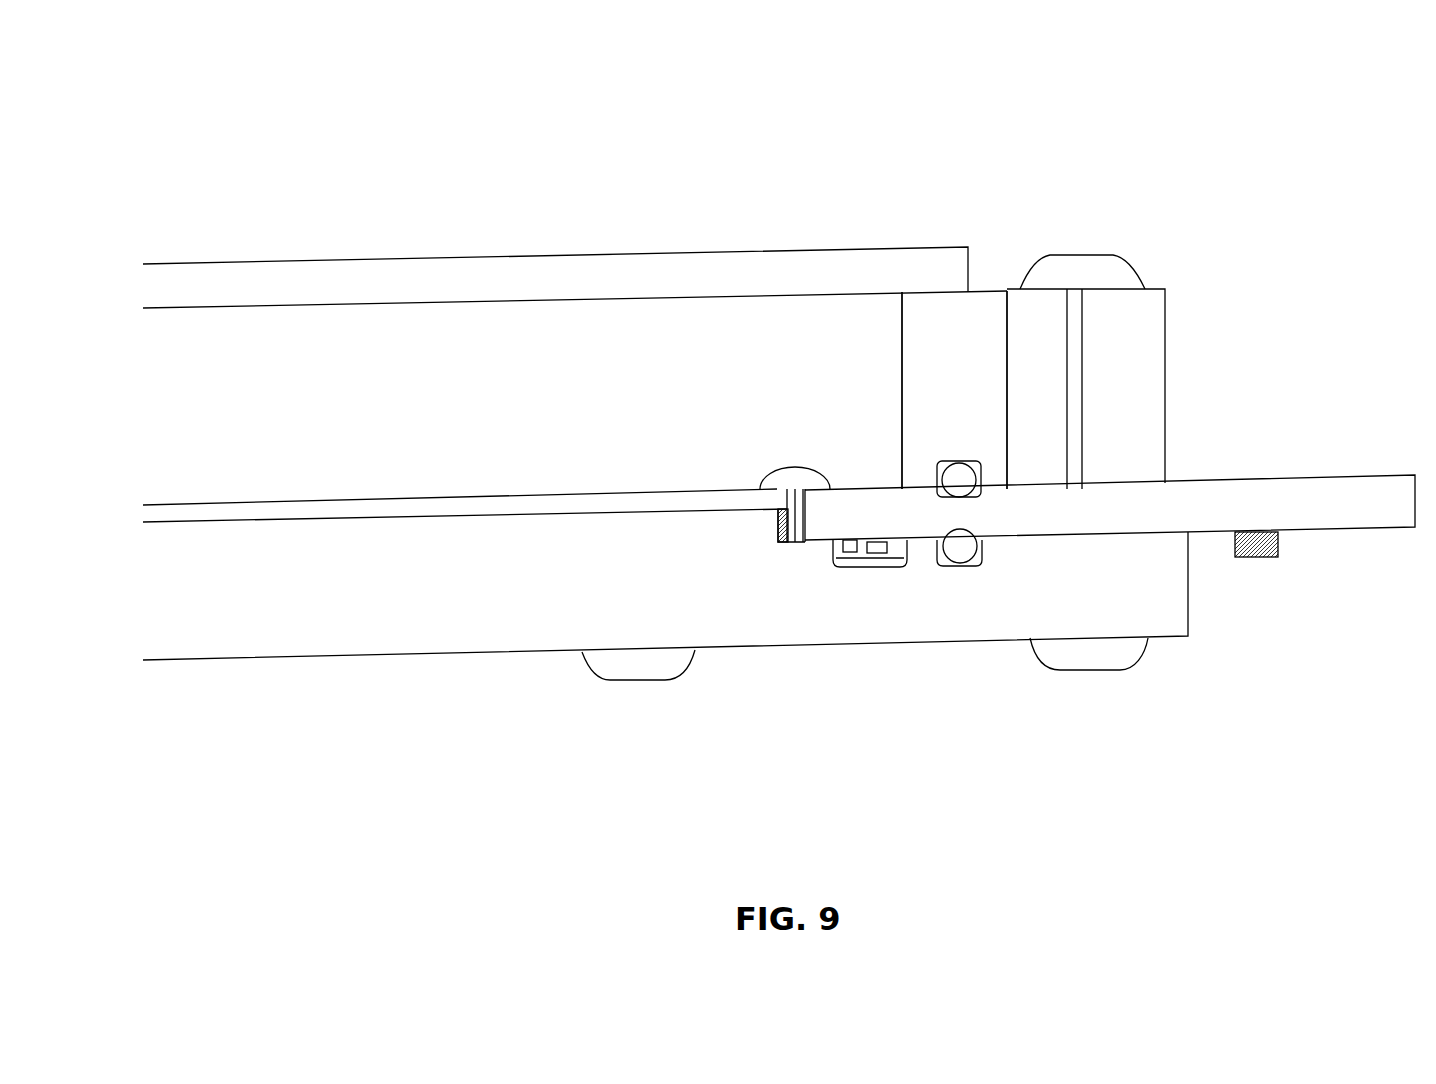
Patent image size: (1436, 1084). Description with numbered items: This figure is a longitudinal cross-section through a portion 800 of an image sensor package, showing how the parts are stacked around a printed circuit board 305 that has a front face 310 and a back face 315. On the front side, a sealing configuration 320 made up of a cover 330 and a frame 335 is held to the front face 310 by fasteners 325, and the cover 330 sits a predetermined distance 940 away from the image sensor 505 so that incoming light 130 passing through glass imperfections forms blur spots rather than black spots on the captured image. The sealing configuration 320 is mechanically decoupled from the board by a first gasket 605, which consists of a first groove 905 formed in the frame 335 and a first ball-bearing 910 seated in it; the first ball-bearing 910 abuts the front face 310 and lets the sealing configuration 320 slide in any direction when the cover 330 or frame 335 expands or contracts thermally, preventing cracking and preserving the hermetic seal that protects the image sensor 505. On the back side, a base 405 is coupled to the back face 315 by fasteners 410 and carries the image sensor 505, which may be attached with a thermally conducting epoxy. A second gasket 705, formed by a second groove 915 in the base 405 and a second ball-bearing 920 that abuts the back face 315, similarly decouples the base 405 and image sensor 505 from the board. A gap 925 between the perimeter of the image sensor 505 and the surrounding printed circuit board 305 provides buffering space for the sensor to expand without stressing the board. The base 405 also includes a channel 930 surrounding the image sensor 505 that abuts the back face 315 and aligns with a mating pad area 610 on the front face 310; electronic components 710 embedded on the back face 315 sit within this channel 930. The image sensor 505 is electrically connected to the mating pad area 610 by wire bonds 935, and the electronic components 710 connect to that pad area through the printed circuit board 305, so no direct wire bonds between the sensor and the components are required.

The portion 800 is at (1240, 137).
The incoming light 130 is at (247, 252).
The image sensor 505 is at (637, 508).
The predetermined distance 940 is at (467, 320).
The sealing configuration 320 is at (925, 147).
The cover 330 is at (850, 277).
The frame 335 is at (933, 333).
The fasteners 325 is at (1079, 270).
The first gasket 605 is at (1267, 317).
The first groove 905 is at (988, 466).
The first ball-bearing 910 is at (960, 482).
The front face 310 is at (1367, 390).
The back face 315 is at (1377, 532).
The printed circuit board 305 is at (1195, 508).
The base 405 is at (300, 605).
The fasteners 410 is at (620, 665).
The wire bonds 935 is at (800, 467).
The gap 925 is at (788, 542).
The mating pad area 610 is at (885, 488).
The channel 930 is at (854, 578).
The electronic components 710 is at (879, 545).
The second gasket 705 is at (1232, 700).
The second groove 915 is at (962, 548).
The second ball-bearing 920 is at (972, 576).